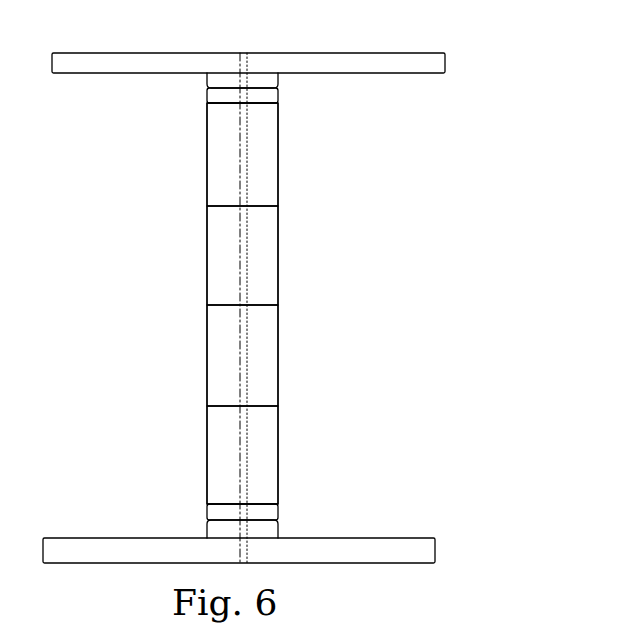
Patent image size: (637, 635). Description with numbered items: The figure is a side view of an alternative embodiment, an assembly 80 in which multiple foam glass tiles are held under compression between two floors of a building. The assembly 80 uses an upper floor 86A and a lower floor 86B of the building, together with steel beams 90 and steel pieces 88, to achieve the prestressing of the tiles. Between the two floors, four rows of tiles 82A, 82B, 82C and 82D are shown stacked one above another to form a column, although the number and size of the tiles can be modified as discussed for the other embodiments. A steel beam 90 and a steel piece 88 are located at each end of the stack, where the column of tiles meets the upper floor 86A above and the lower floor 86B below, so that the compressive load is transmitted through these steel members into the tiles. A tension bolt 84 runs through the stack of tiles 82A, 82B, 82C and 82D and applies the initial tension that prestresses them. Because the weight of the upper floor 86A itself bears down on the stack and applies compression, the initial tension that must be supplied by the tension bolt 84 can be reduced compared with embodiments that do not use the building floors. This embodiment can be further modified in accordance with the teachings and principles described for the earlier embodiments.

The assembly 80 is at (466, 154).
The tile (first row) 82A is at (262, 164).
The tile (second row) 82B is at (262, 275).
The tile (third row) 82C is at (258, 374).
The tile (fourth row) 82D is at (262, 464).
The tension bolt 84 is at (230, 272).
The upper floor 86A is at (423, 63).
The lower floor 86B is at (402, 549).
The steel piece 88 is at (288, 99).
The steel beam 90 is at (210, 77).